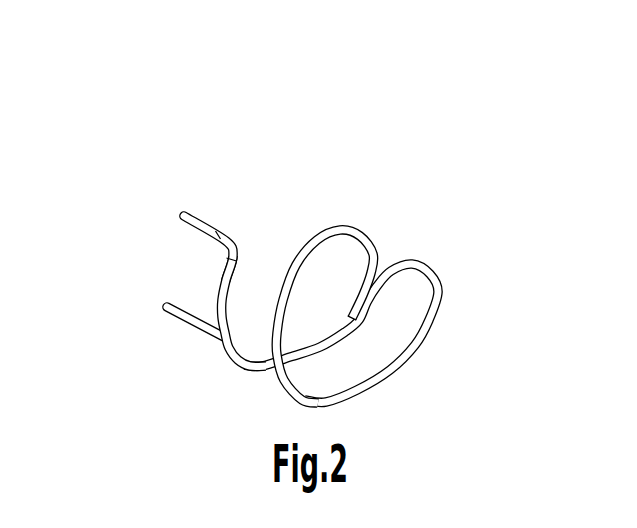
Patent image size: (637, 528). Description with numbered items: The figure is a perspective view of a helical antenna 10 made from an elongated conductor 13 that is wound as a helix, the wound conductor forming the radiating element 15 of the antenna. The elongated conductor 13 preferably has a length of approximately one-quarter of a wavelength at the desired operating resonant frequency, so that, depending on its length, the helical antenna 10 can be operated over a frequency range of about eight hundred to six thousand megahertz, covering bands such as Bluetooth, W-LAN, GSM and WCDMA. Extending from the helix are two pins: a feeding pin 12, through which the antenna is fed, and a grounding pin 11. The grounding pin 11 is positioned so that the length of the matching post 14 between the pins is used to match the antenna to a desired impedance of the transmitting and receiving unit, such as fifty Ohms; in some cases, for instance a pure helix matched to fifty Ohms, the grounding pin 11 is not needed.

The helical antenna 10 is at (307, 242).
The grounding pin 11 is at (190, 212).
The feeding pin 12 is at (166, 311).
The elongated conductor 13 is at (433, 318).
The matching post 14 is at (214, 277).
The radiating element 15 is at (340, 402).